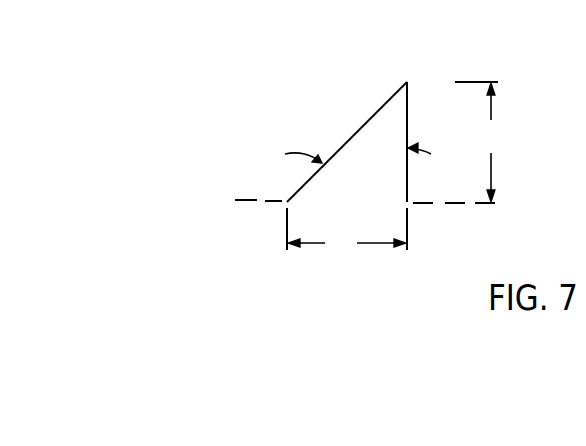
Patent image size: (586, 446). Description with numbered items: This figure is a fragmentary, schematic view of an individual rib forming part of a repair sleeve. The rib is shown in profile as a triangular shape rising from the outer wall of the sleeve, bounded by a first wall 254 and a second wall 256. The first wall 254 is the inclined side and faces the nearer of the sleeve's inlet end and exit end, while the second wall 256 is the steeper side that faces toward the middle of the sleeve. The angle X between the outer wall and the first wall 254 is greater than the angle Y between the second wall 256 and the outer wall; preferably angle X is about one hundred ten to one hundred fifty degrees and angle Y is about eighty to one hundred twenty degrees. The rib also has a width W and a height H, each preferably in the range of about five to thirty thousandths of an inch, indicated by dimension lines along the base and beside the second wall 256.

The first wall 254 is at (351, 138).
The second wall 256 is at (410, 82).
The angle X is at (245, 199).
The angle Y is at (450, 203).
The height H is at (477, 142).
The width W is at (347, 233).